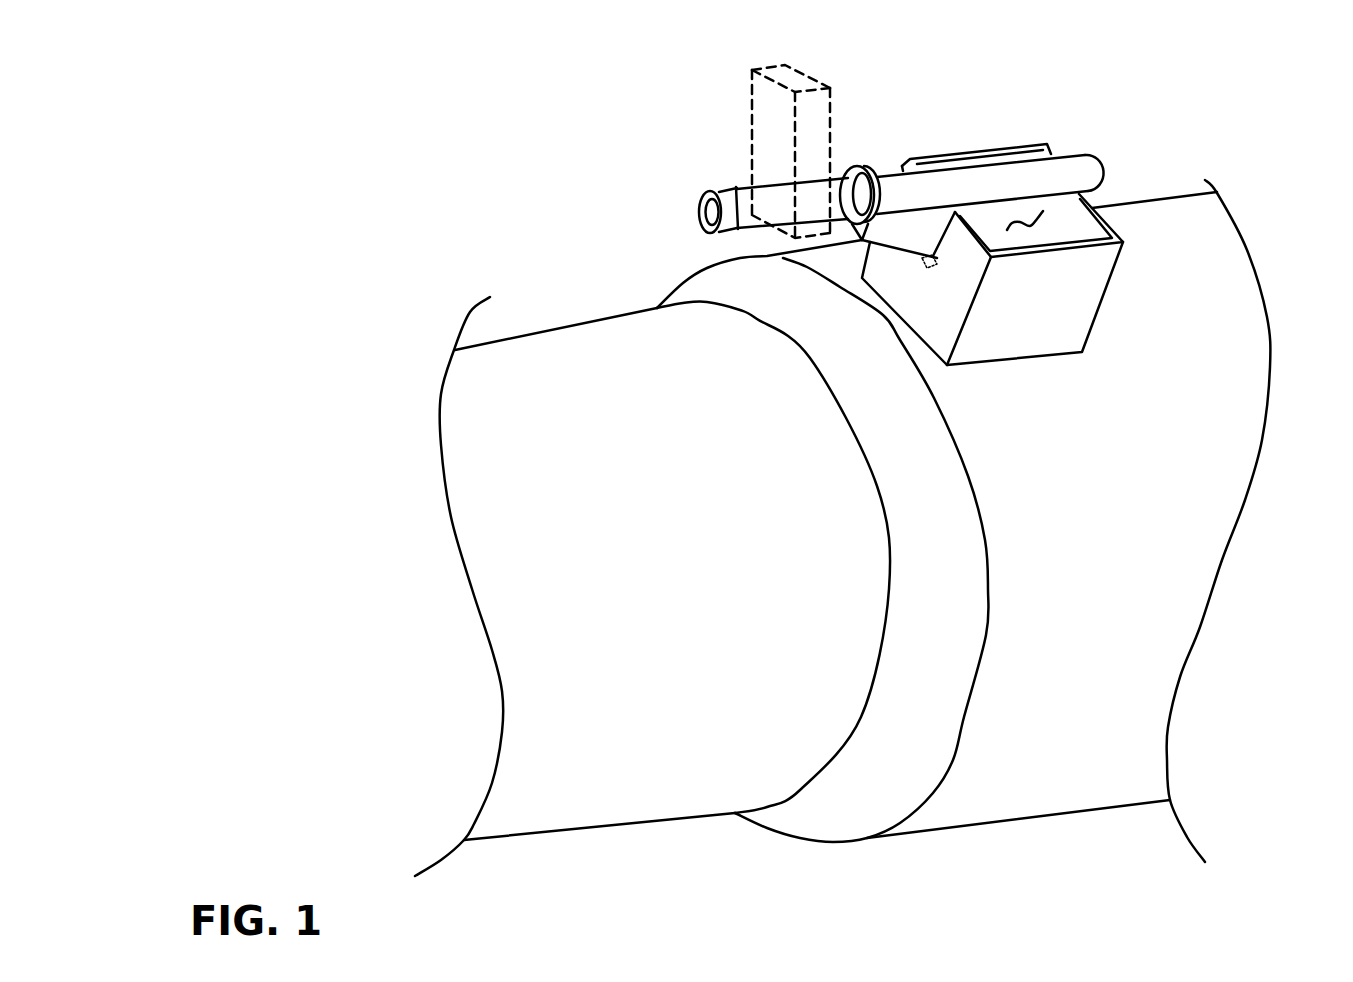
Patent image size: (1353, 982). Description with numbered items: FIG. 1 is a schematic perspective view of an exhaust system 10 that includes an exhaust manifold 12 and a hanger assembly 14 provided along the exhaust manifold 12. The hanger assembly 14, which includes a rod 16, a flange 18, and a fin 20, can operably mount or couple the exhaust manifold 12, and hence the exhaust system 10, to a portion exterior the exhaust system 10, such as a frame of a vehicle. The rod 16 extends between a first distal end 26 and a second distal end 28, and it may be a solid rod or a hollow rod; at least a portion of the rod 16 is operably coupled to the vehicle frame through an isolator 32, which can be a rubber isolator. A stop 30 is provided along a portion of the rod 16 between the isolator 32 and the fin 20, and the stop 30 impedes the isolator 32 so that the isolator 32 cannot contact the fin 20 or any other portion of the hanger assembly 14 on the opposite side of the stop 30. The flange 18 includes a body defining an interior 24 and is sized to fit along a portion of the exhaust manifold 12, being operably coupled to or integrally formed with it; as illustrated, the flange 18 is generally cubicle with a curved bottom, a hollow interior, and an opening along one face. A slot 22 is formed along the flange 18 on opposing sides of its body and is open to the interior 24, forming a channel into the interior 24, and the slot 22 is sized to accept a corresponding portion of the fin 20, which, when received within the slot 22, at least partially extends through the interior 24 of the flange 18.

The exhaust system 10 is at (340, 105).
The exhaust manifold 12 is at (1040, 817).
The hanger assembly 14 is at (1026, 138).
The rod 16 is at (767, 187).
The flange 18 is at (1110, 225).
The fin 20 is at (900, 248).
The slot 22 is at (930, 274).
The interior 24 is at (1030, 226).
The first distal end 26 is at (702, 208).
The second distal end 28 is at (1108, 159).
The stop 30 is at (866, 168).
The isolator 32 is at (750, 102).